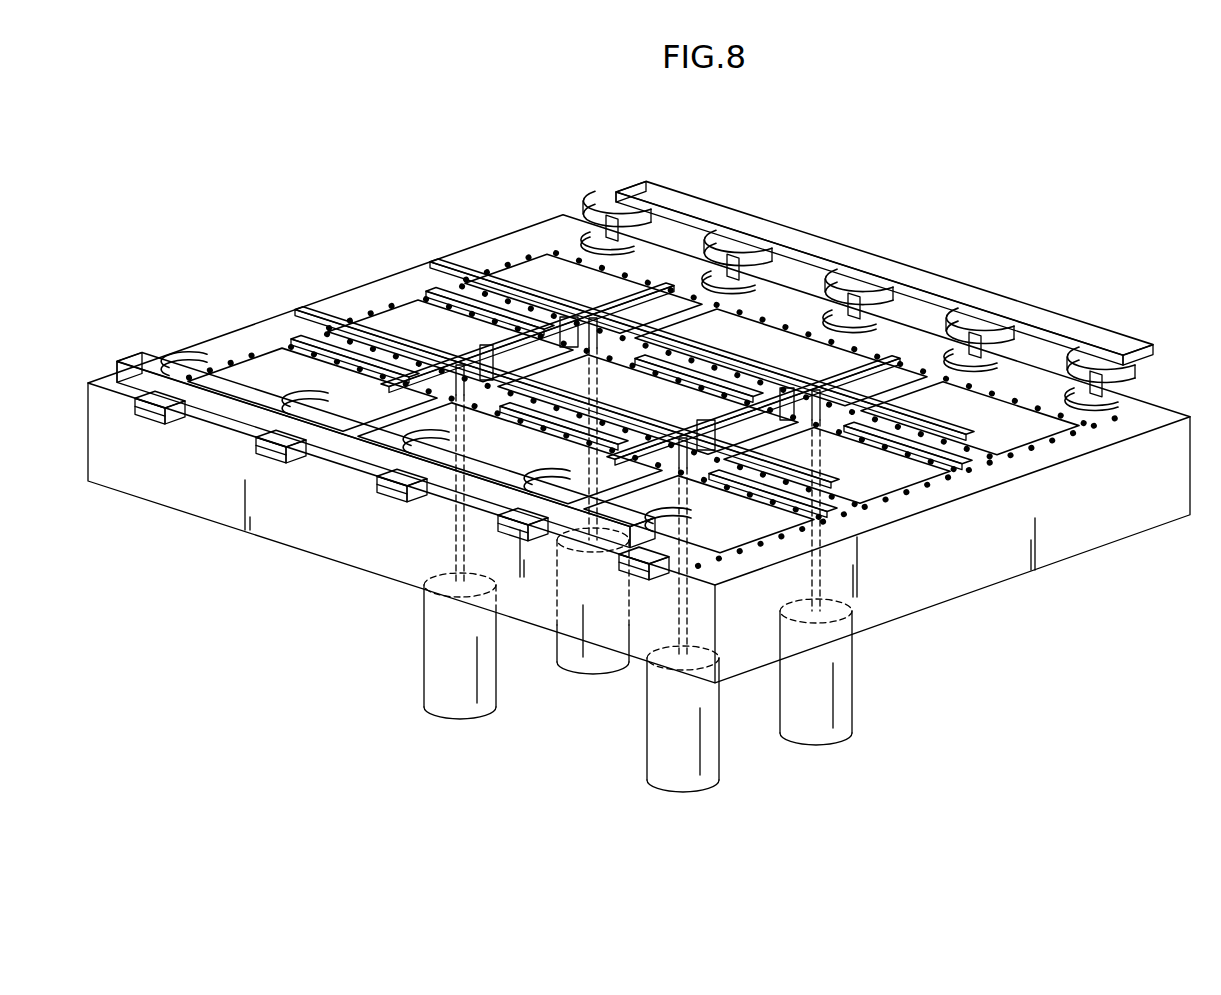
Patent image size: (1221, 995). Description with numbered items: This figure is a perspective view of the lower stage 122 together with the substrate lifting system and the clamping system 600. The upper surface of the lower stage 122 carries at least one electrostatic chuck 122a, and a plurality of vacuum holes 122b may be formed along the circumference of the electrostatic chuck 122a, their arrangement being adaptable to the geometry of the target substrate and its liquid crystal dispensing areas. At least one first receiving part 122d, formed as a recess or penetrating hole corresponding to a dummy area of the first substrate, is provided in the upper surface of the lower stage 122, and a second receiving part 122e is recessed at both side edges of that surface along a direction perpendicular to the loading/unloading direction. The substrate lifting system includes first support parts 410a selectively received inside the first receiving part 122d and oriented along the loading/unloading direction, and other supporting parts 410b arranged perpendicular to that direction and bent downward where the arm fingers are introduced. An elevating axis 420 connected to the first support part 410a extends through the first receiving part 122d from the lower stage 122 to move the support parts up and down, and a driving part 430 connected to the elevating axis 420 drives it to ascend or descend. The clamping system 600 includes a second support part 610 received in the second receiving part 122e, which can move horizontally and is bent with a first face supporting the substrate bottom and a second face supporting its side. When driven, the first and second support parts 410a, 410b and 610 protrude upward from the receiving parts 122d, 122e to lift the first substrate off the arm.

The lower stage 122 is at (892, 612).
The electrostatic chuck 122a is at (552, 263).
The vacuum holes 122b is at (497, 268).
The first receiving part 122d is at (443, 290).
The second receiving part 122e is at (392, 496).
The first support parts 410a is at (747, 352).
The other supporting parts 410b is at (637, 293).
The elevating axis 420 is at (452, 543).
The driving part 430 is at (557, 647).
The clamping system 600 is at (893, 268).
The second support part 610 is at (1013, 303).